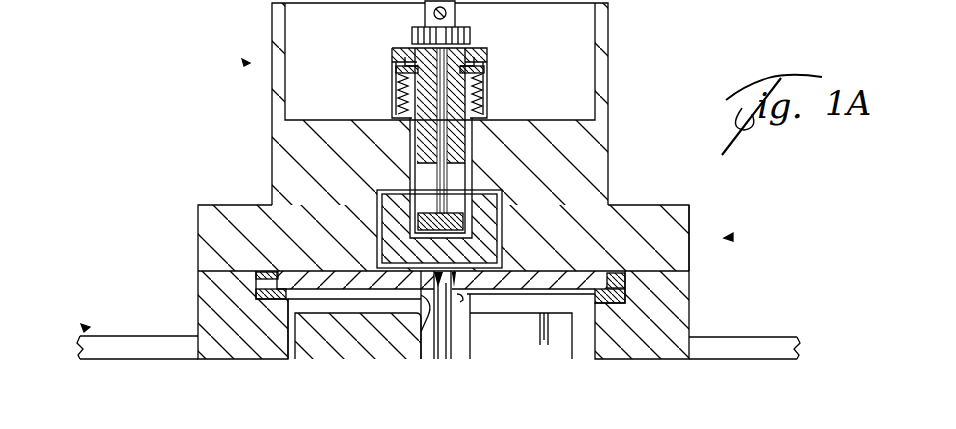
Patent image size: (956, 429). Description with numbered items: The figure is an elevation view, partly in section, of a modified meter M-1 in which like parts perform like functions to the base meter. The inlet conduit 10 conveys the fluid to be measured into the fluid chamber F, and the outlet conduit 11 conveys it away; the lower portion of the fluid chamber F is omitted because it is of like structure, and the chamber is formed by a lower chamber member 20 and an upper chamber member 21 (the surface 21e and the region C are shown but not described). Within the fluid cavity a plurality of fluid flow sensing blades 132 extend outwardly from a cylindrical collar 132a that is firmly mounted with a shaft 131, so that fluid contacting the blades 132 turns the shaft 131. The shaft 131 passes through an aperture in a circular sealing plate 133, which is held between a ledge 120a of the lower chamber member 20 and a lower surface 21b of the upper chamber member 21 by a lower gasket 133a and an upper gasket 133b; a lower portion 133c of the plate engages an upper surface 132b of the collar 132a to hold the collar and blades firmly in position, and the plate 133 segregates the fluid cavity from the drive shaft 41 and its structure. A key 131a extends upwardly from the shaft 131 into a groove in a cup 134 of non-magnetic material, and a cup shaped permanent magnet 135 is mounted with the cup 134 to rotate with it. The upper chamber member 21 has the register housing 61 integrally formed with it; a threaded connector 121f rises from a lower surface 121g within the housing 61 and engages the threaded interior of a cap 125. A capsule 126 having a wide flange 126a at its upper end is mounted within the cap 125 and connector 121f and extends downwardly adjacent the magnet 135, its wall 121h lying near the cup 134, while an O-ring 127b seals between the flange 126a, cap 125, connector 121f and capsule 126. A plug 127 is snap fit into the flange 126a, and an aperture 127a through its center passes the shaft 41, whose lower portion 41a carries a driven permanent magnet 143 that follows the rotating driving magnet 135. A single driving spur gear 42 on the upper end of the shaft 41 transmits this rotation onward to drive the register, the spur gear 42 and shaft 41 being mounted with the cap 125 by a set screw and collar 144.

The modified meter M-1 is at (250, 63).
The plug 127 is at (418, 52).
The flange 126a is at (406, 60).
The aperture 127a is at (437, 100).
The capsule 126 is at (408, 124).
The set screw and collar 144 is at (447, 15).
The driving spur gear 42 is at (472, 35).
The shaft 41 is at (487, 51).
The cap 125 is at (489, 62).
The O-ring 127b is at (478, 80).
The threaded connector 121f is at (483, 99).
The register housing 61 is at (609, 31).
The lower surface 121g is at (568, 122).
The tube 121h is at (414, 164).
The lower portion of shaft 41a is at (438, 202).
The driven permanent magnet 143 is at (421, 222).
The key 131a is at (440, 256).
The cup shaped permanent magnet 135 is at (484, 193).
The cup 134 is at (498, 203).
The circular sealing plate 133 is at (614, 272).
The upper gasket 133b is at (573, 272).
The upper chamber member 21 is at (674, 222).
The fluid chamber F is at (724, 238).
The block surface 21e is at (320, 214).
The lower surface of upper chamber member 21b is at (198, 280).
The inlet conduit 10 is at (167, 340).
The cavity direction C is at (90, 327).
The fluid flow sensing blades 132 is at (528, 342).
The ledge 120a is at (272, 300).
The lower portion of sealing plate 133c is at (439, 343).
The shaft 131 is at (432, 305).
The cylindrical collar 132a is at (463, 349).
The upper surface of collar 132b is at (462, 297).
The lower gasket 133a is at (627, 296).
The lower chamber member 20 is at (676, 311).
The outlet conduit 11 is at (772, 345).